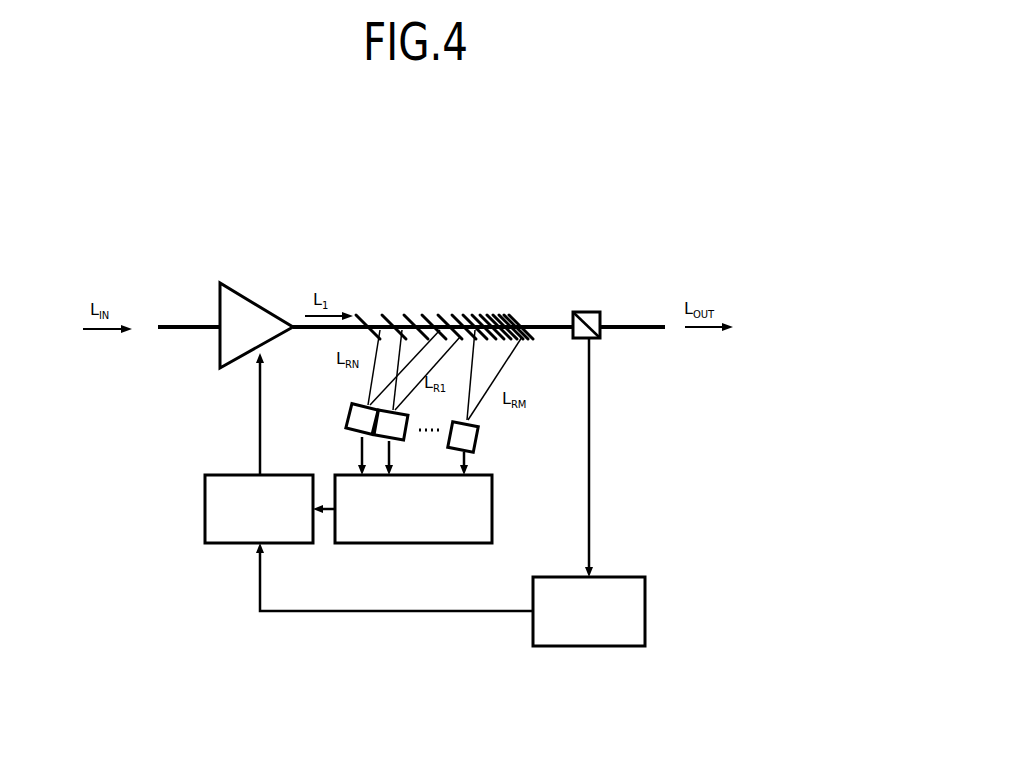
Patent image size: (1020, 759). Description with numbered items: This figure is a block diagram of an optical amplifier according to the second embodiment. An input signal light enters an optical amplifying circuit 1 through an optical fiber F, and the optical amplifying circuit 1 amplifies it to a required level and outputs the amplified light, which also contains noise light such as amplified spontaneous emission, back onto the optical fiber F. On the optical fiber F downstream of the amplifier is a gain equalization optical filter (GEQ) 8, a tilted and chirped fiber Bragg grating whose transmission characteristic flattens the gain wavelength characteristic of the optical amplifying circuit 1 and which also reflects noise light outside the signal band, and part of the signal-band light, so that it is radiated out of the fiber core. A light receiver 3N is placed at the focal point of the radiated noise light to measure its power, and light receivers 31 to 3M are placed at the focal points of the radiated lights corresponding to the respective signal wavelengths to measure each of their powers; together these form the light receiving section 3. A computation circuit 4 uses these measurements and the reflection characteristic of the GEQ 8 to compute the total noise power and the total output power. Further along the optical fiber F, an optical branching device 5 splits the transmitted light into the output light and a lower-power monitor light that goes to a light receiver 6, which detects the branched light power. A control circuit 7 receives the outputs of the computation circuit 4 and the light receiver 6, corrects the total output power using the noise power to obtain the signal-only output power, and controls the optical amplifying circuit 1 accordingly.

The optical amplifying circuit 1 is at (260, 304).
The light receiver 3 is at (421, 443).
The light receiver 3N is at (348, 403).
The light receiver 31 is at (404, 441).
The light receiver 3M is at (478, 438).
The computation circuit 4 is at (413, 543).
The optical branching device 5 is at (590, 312).
The light receiver 6 is at (615, 577).
The control circuit 7 is at (233, 544).
The gain equalization optical filter (GEQ) 8 is at (523, 293).
The optical fiber F is at (185, 331).